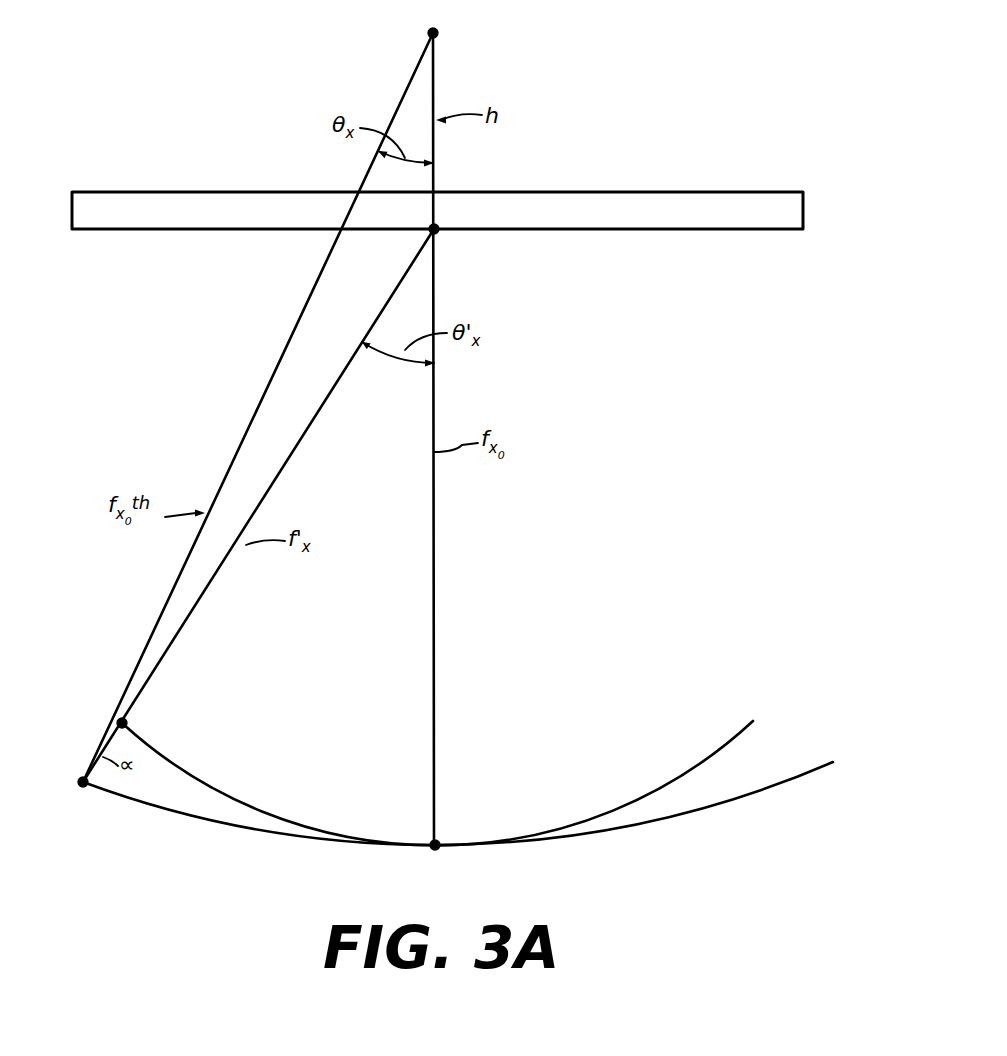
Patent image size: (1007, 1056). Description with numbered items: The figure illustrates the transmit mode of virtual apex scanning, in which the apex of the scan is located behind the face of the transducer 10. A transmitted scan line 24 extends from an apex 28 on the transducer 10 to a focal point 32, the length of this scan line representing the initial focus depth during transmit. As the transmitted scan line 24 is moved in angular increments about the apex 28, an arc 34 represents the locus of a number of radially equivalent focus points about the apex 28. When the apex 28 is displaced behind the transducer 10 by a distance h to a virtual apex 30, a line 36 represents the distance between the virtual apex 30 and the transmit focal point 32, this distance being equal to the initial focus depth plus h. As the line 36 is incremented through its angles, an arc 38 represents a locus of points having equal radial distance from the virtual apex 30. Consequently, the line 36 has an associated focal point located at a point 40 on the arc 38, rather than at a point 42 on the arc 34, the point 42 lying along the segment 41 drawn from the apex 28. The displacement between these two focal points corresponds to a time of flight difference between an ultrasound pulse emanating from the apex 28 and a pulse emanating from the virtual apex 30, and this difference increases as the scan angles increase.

The transducer 10 is at (656, 180).
The transmitted scan line 24 is at (434, 578).
The apex 28 is at (438, 234).
The virtual apex 30 is at (444, 35).
The focal point 32 is at (438, 851).
The arc 34 is at (230, 793).
The line 36 is at (283, 353).
The arc 38 is at (250, 832).
The point 40 is at (81, 781).
The actual ray 41 is at (304, 434).
The point 42 is at (127, 722).